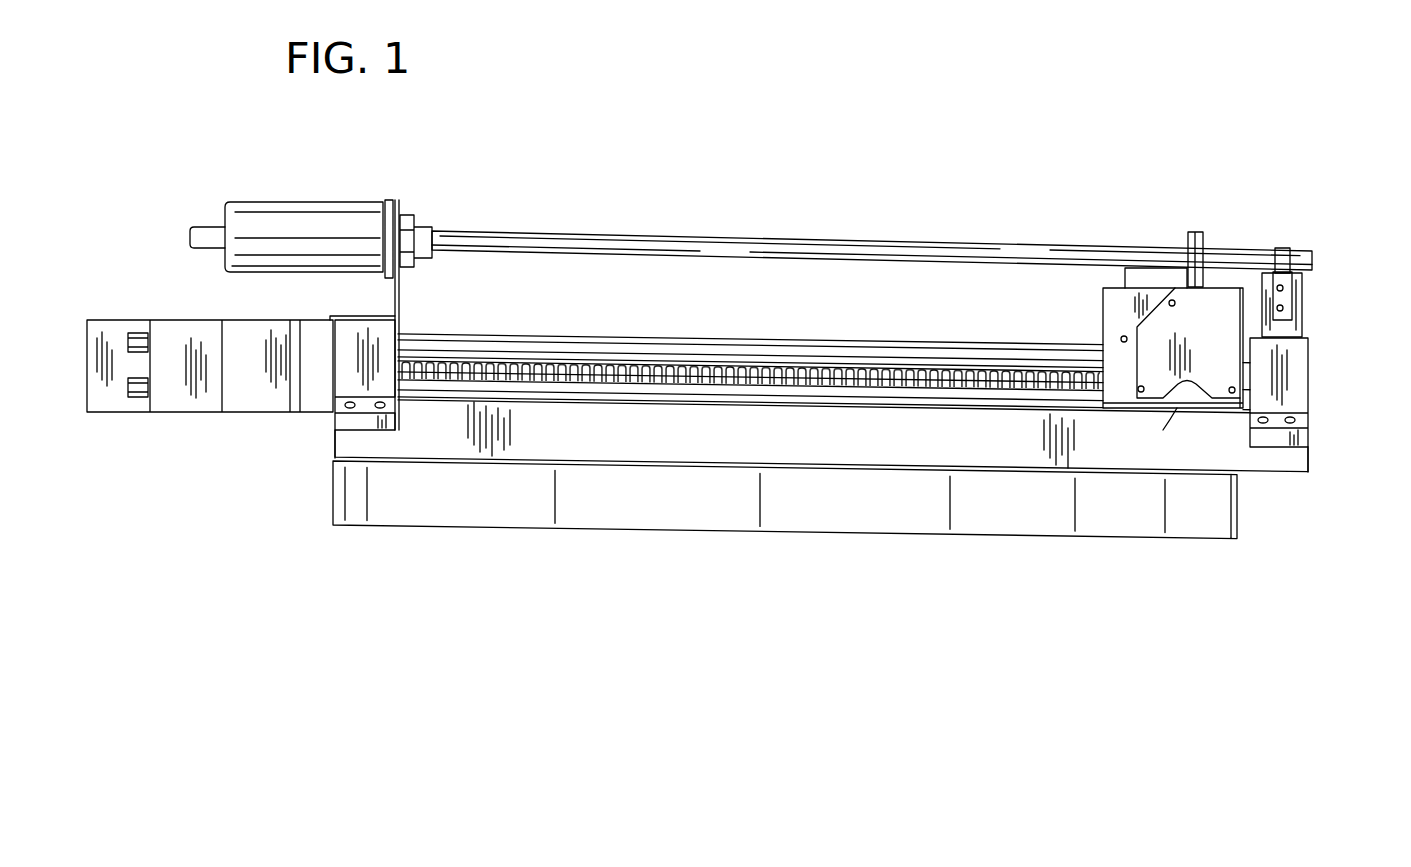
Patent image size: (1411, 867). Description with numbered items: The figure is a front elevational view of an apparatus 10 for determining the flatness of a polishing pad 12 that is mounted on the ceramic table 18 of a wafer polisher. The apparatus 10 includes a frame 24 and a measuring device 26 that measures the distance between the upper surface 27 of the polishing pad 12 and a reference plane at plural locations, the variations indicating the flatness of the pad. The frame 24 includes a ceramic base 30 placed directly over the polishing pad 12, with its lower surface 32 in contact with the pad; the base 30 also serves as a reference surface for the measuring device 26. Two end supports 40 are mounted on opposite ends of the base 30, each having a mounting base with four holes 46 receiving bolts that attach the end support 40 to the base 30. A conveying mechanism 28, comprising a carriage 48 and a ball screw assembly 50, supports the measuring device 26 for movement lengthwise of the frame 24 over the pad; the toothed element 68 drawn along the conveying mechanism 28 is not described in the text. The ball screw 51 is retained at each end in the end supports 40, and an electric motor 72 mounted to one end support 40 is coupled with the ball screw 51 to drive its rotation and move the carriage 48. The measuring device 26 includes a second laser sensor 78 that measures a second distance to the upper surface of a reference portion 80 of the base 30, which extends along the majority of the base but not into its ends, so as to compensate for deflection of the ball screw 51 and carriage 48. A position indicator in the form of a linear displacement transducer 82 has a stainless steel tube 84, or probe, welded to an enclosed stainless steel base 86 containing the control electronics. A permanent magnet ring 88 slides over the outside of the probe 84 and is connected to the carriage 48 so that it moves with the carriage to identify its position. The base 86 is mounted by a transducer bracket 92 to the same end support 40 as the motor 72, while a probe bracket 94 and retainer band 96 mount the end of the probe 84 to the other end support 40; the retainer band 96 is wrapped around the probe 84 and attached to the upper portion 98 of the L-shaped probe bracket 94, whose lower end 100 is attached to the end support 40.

The apparatus 10 is at (786, 224).
The polishing pad 12 is at (333, 460).
The ceramic table 18 is at (388, 497).
The frame 24 is at (330, 424).
The measuring device 26 is at (1128, 341).
The upper surface 27 is at (602, 457).
The conveying mechanism 28 is at (824, 369).
The ceramic base 30 is at (1245, 462).
The lower surface 32 is at (785, 514).
The end support 40 is at (343, 334).
The holes 46 is at (1263, 420).
The carriage 48 is at (1128, 287).
The ball screw assembly 50 is at (650, 332).
The ball screw 51 is at (977, 397).
The rack 68 is at (448, 355).
The electric motor 72 is at (115, 332).
The second laser sensor 78 is at (1110, 293).
The reference portion 80 is at (782, 423).
The linear displacement transducer 82 is at (325, 216).
The stainless steel tube 84 is at (522, 242).
The stainless steel base 86 is at (280, 218).
The permanent magnet ring 88 is at (1203, 232).
The transducer bracket 92 is at (385, 315).
The probe bracket 94 is at (1302, 310).
The retainer band 96 is at (1297, 212).
The upper portion 98 is at (397, 198).
The lower end 100 is at (370, 315).